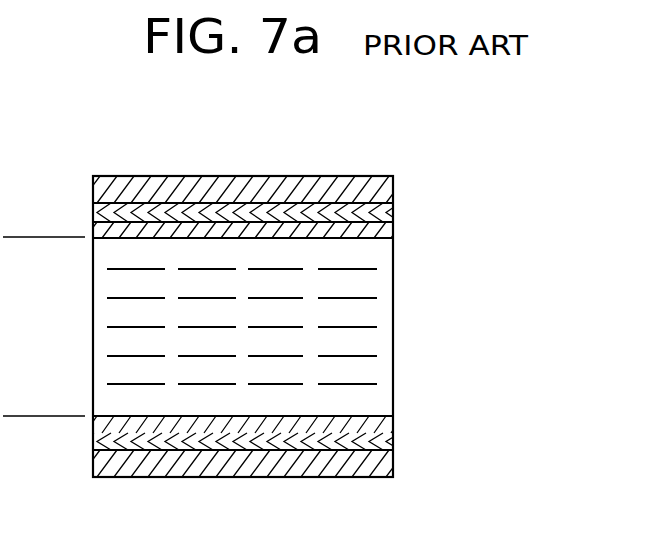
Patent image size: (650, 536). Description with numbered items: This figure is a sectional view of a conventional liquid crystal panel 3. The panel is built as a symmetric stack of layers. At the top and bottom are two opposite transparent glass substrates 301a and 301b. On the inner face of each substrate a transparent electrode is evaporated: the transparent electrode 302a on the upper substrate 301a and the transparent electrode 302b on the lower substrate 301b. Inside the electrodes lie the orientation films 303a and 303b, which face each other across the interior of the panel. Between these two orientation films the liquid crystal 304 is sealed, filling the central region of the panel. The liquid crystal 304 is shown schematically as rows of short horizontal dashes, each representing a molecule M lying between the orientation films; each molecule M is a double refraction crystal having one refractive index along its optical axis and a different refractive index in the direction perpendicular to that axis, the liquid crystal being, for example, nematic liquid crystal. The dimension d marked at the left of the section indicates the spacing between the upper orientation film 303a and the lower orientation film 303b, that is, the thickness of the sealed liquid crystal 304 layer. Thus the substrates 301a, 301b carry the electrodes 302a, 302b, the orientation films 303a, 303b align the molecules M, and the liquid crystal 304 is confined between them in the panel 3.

The liquid crystal panel 3 is at (303, 172).
The transparent glass substrate 301a is at (393, 190).
The transparent electrode 302a is at (393, 213).
The orientation film 303a is at (393, 232).
The liquid crystal 304 is at (407, 235).
The orientation film 303b is at (393, 428).
The transparent electrode 302b is at (393, 444).
The transparent glass substrate 301b is at (393, 460).
The cell gap d is at (51, 237).
The molecule M is at (125, 384).